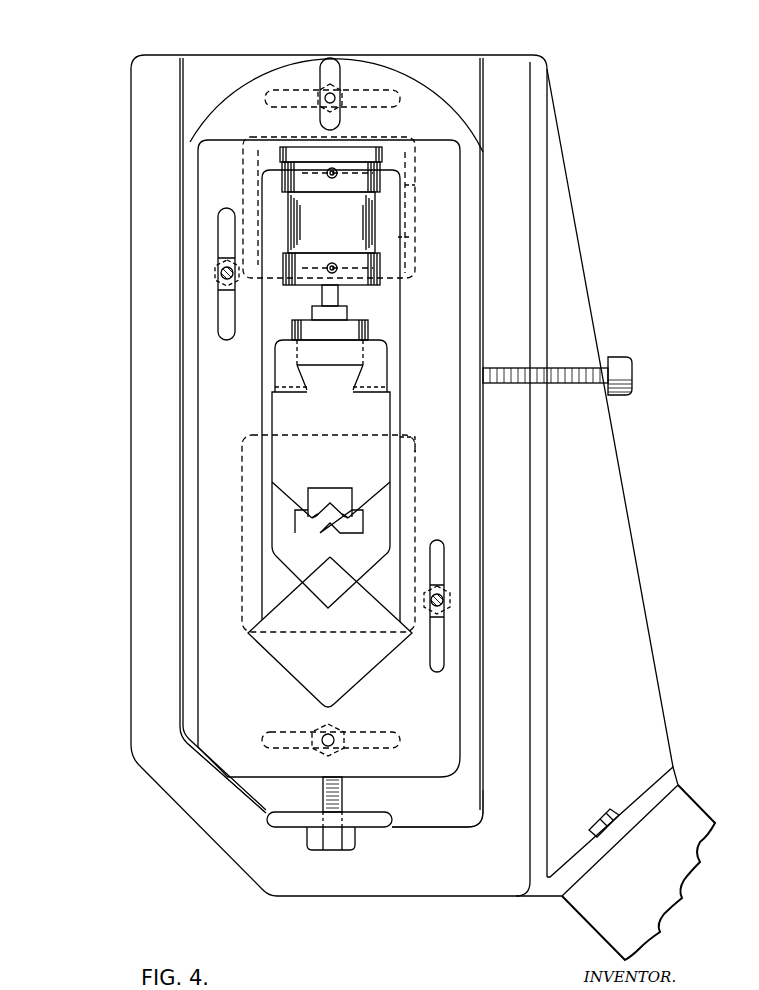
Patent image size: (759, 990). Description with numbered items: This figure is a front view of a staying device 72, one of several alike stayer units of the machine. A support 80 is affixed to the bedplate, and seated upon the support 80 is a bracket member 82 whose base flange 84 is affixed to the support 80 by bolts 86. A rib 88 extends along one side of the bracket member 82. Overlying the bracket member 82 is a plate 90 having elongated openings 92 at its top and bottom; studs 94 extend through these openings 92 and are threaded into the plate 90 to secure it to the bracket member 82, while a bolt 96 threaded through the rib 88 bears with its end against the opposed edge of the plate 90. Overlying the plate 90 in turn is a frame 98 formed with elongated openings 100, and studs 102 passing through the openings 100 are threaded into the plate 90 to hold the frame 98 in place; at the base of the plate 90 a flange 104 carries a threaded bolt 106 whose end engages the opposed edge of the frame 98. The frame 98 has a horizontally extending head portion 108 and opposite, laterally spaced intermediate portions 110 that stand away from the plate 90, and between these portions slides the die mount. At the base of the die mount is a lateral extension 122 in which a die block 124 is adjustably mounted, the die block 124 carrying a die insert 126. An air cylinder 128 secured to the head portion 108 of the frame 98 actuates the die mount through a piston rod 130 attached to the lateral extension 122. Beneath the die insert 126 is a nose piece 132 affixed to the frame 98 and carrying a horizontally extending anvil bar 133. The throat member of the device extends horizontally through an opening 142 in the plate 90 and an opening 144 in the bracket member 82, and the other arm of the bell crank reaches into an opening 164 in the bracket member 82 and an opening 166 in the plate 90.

The staying device 72 is at (100, 494).
The support 80 is at (665, 905).
The bracket member 82 is at (133, 370).
The base flange 84 is at (643, 801).
The bolts 86 is at (603, 821).
The rib 88 is at (547, 506).
The plate 90 is at (446, 825).
The elongated openings 92 is at (393, 90).
The studs 94 is at (336, 86).
The bolt 96 is at (632, 373).
The frame 98 is at (200, 705).
The elongated openings 100 is at (234, 322).
The studs 102 is at (222, 273).
The flange 104 is at (289, 816).
The bolt 106 is at (344, 798).
The head portion 108 is at (450, 140).
The intermediate portions 110 is at (205, 406).
The lateral extension 122 is at (378, 358).
The die block 124 is at (378, 413).
The die insert 126 is at (323, 494).
The air cylinder 128 is at (378, 240).
The rod 130 is at (340, 297).
The nose piece 132 is at (291, 661).
The anvil bar 133 is at (337, 574).
The opening 142 is at (397, 493).
The opening 144 is at (416, 453).
The opening 164 is at (414, 192).
The opening 166 is at (410, 236).